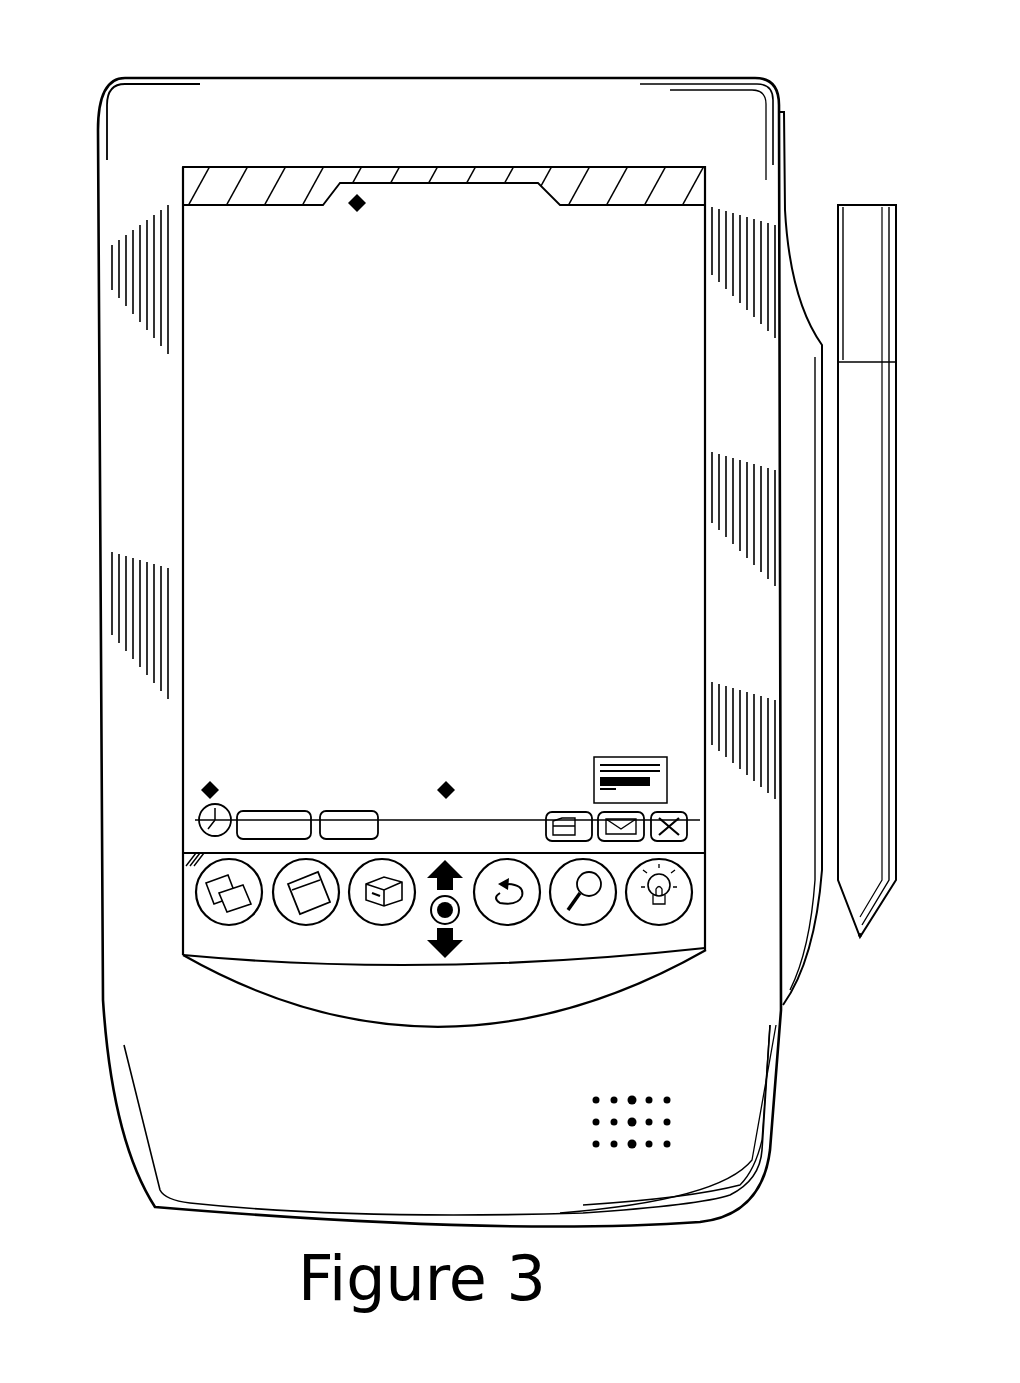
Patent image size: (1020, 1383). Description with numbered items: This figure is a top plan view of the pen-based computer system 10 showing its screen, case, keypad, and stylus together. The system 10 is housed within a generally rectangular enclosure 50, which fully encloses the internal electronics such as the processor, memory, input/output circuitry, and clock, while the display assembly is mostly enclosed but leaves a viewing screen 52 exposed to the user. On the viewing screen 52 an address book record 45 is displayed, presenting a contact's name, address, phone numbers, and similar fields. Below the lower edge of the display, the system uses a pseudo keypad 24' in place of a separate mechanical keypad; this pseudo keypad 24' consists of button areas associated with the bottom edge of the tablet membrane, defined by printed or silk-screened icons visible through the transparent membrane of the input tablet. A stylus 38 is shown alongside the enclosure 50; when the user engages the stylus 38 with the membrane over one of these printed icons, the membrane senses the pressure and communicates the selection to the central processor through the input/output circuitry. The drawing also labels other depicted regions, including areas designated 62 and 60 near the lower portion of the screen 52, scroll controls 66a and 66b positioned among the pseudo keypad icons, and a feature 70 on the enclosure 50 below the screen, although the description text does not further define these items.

The pen-based computer system 10 is at (139, 44).
The address book record 45 is at (571, 248).
The stylus 38 is at (876, 214).
The viewing screen 52 is at (202, 711).
The status bar 62 is at (186, 860).
The button bar 60 is at (186, 926).
The enclosure 50 is at (120, 998).
The scroll up button 66a is at (432, 866).
The scroll down button 66b is at (452, 960).
The pseudo keypad 24' is at (782, 954).
The speaker 70 is at (682, 1122).